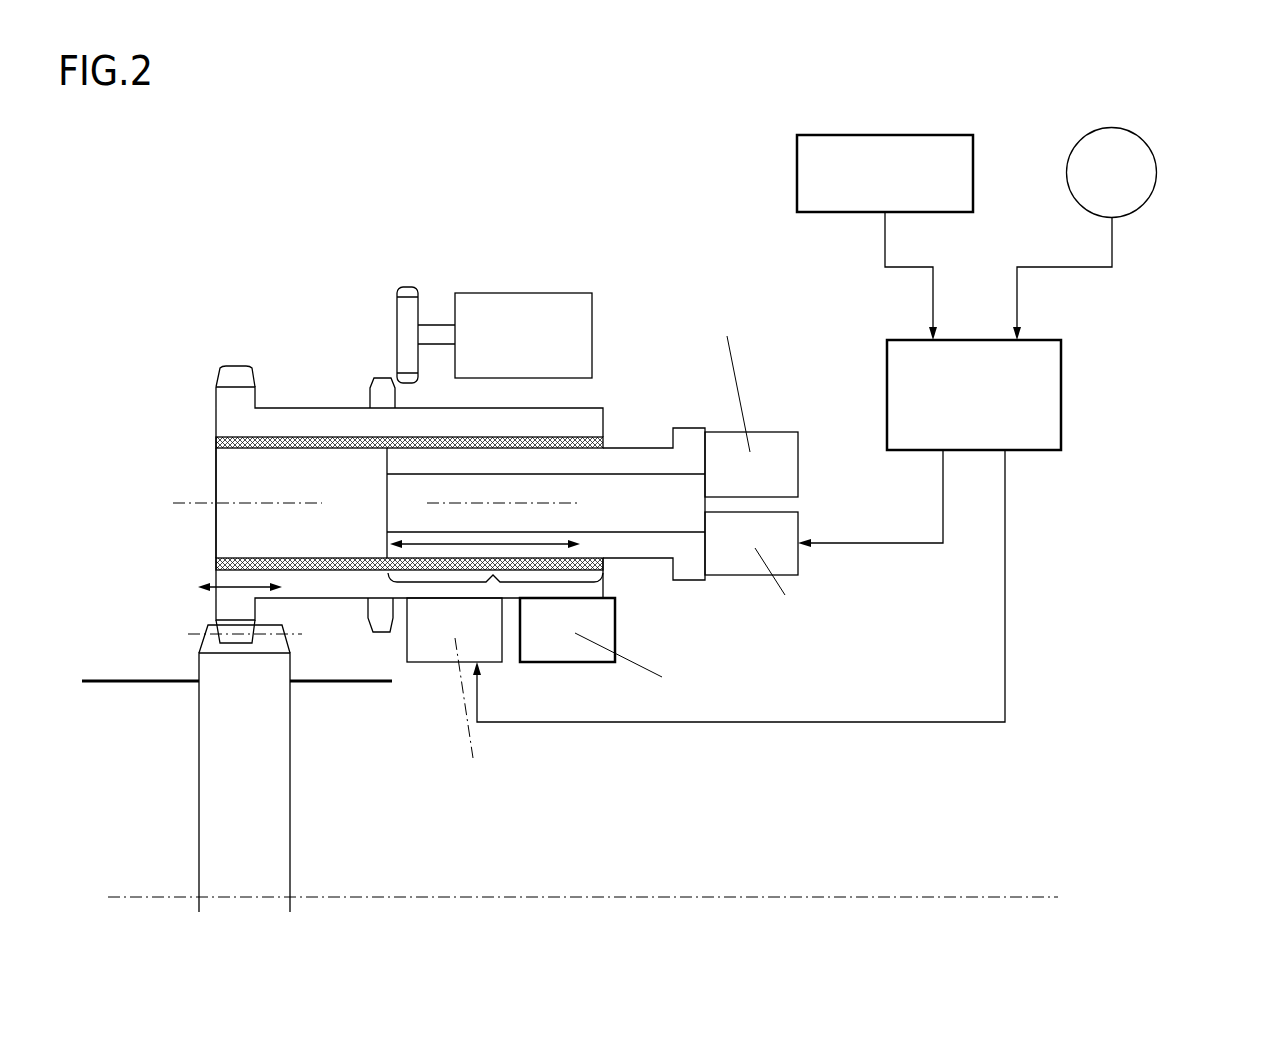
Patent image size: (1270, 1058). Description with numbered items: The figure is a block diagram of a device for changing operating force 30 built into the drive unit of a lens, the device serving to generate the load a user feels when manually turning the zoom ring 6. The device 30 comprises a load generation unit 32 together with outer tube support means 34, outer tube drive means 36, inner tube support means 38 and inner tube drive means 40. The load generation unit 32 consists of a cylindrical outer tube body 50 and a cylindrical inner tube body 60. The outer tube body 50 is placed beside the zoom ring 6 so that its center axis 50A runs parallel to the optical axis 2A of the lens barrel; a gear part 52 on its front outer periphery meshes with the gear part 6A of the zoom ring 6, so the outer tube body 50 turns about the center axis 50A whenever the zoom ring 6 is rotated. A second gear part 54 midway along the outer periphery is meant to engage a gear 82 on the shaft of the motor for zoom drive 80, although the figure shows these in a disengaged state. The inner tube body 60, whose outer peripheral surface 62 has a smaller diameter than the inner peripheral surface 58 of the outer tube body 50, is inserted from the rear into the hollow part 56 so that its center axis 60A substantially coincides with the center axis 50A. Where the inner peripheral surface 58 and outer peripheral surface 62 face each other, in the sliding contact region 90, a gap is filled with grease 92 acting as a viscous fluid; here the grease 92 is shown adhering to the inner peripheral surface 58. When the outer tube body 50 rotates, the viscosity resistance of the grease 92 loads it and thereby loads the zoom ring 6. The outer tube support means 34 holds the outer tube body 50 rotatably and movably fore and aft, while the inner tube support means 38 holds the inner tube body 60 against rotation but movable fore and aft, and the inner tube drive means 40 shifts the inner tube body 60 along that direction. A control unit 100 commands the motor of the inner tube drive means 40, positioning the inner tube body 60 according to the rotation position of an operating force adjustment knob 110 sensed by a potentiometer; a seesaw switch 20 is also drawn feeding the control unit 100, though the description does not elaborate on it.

The device for changing operating force 30 is at (180, 213).
The load generation unit 32 is at (195, 380).
The outer tube body 50 is at (310, 407).
The center axis 50A is at (227, 491).
The gear part 52 is at (243, 367).
The gear part 54 is at (383, 380).
The hollow part 56 is at (238, 467).
The inner peripheral surface 58 is at (348, 440).
The inner tube body 60 is at (643, 453).
The center axis 60A is at (502, 491).
The outer peripheral surface 62 is at (618, 565).
The sliding contact region 90 is at (494, 577).
The grease 92 is at (285, 440).
The motor for zoom drive 80 is at (560, 305).
The gear 82 is at (411, 288).
The outer tube support means 34 is at (595, 663).
The outer tube drive means 36 is at (415, 663).
The inner tube support means 38 is at (800, 457).
The inner tube drive means 40 is at (718, 580).
The zoom ring 6 is at (118, 695).
The gear part 6A is at (223, 692).
The optical axis 2A is at (583, 881).
The seesaw switch 20 is at (797, 152).
The control unit 100 is at (1061, 362).
The operating force adjustment knob 110 is at (1157, 170).